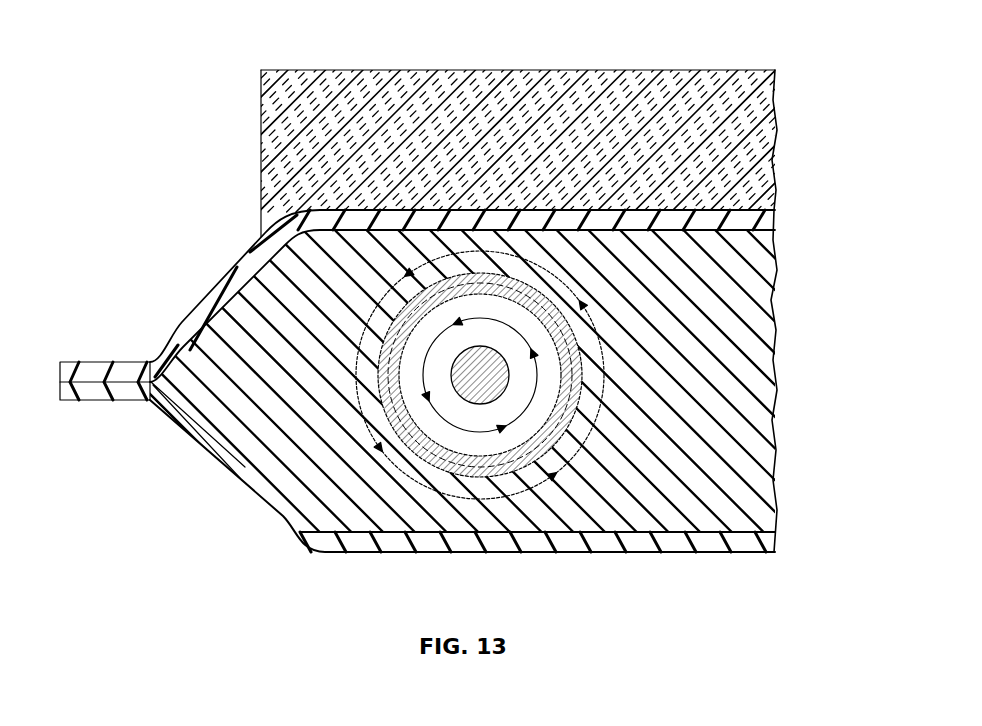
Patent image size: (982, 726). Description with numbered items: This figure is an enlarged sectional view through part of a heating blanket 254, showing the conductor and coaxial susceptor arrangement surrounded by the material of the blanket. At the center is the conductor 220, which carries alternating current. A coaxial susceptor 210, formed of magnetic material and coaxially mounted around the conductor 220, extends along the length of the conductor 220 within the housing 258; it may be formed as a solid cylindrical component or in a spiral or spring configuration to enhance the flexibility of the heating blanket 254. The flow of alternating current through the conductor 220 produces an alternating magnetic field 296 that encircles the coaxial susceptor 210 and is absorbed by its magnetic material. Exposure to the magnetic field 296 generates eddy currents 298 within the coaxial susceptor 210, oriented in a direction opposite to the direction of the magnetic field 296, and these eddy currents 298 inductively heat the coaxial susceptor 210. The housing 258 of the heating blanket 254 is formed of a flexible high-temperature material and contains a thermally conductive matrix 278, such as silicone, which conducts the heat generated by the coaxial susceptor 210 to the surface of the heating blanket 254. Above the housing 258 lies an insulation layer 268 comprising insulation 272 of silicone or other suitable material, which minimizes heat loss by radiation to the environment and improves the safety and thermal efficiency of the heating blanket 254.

The heating blanket 254 is at (775, 38).
The insulation 272 is at (357, 88).
The insulation layer 268 is at (546, 100).
The thermally conductive matrix 278 is at (733, 307).
The housing 258 is at (745, 551).
The magnetic field 296 is at (422, 372).
The coaxial susceptor 210 is at (385, 428).
The eddy currents 298 is at (405, 440).
The conductor 220 is at (482, 377).